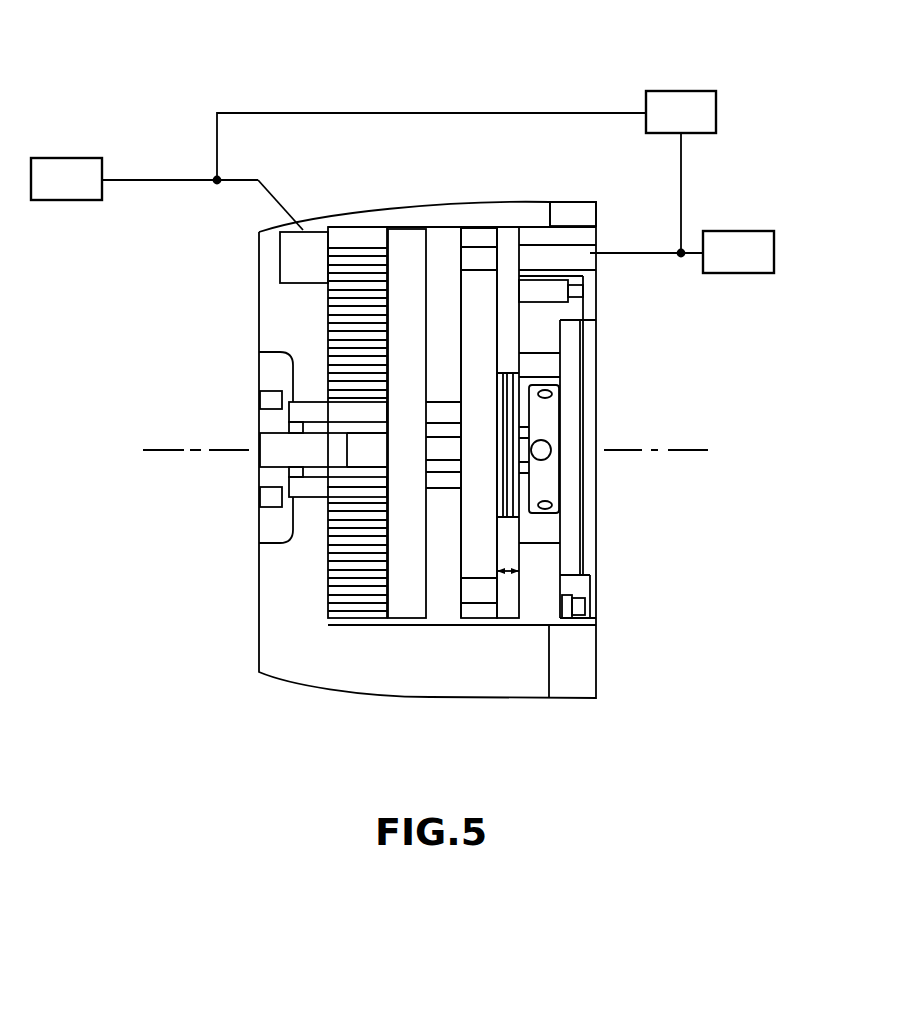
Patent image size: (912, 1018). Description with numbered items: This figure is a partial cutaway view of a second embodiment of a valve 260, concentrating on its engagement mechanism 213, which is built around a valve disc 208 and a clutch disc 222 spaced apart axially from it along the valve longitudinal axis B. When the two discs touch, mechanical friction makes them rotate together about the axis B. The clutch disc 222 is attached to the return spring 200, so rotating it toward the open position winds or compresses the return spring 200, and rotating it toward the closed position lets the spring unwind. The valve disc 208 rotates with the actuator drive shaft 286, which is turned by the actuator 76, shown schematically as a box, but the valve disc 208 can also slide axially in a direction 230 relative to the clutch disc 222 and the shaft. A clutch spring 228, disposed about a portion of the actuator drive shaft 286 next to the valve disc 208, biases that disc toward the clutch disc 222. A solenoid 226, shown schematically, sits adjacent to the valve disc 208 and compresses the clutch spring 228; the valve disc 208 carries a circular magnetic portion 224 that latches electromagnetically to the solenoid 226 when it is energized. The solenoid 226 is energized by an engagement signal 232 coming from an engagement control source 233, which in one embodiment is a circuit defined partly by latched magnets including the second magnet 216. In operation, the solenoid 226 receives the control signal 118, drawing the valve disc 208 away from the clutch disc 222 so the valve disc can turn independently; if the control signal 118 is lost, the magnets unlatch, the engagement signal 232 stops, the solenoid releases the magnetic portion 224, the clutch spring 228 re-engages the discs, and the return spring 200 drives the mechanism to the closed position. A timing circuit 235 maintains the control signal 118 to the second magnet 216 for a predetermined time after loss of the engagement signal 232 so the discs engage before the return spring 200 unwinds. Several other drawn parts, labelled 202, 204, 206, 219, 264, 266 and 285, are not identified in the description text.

The actuator 76 is at (65, 200).
The control signal 118 is at (178, 180).
The return spring 200 is at (332, 605).
The armature plate 202 is at (327, 487).
The coil 204 is at (357, 240).
The shaft 206 is at (302, 477).
The valve disc 208 is at (488, 233).
The engagement mechanism 213 is at (456, 80).
The second magnet 216 is at (280, 260).
The power line 219 is at (302, 94).
The clutch disc 222 is at (410, 240).
The magnetic portion 224 is at (470, 257).
The solenoid 226 is at (590, 253).
The clutch spring 228 is at (510, 363).
The direction 230 is at (507, 575).
The engagement signal 232 is at (655, 253).
The engagement control source 233 is at (733, 231).
The timing circuit 235 is at (678, 91).
The valve 260 is at (165, 150).
The housing wall 264 is at (315, 218).
The end wall 266 is at (560, 208).
The air gap 285 is at (446, 225).
The actuator drive shaft 286 is at (542, 532).
The valve longitudinal axis B is at (655, 450).